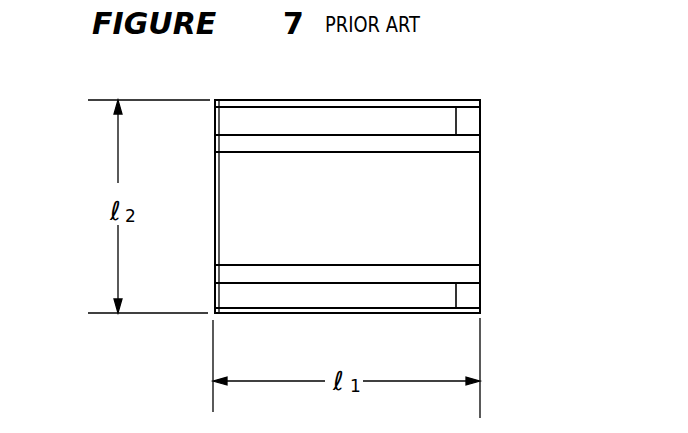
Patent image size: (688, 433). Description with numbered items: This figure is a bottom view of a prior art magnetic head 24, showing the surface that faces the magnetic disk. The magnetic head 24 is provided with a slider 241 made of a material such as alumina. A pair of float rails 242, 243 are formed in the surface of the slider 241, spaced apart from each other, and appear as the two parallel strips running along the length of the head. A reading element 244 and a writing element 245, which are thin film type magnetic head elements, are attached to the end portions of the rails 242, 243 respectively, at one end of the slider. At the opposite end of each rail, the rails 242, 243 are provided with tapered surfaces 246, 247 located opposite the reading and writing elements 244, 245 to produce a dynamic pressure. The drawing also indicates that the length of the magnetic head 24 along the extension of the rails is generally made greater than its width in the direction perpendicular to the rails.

The magnetic head 24 is at (279, 86).
The slider 241 is at (462, 204).
The float rail 242 is at (390, 118).
The float rail 243 is at (390, 290).
The reading element 244 is at (215, 122).
The writing element 245 is at (215, 293).
The tapered surface 246 is at (466, 123).
The tapered surface 247 is at (468, 298).